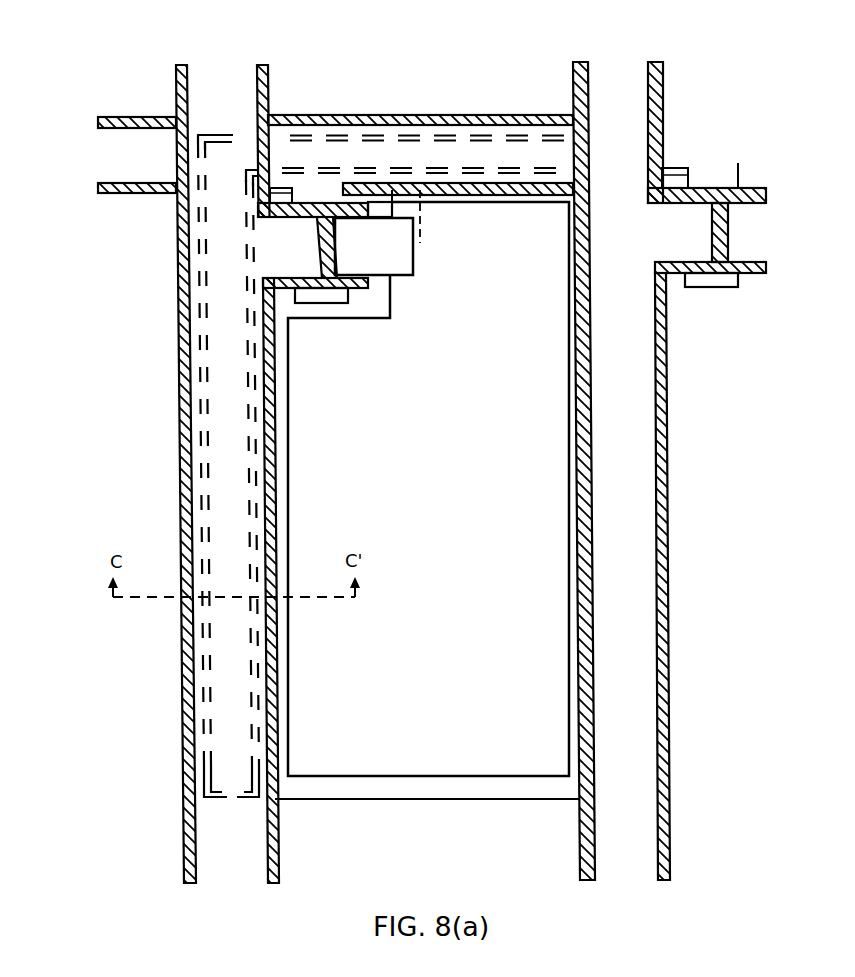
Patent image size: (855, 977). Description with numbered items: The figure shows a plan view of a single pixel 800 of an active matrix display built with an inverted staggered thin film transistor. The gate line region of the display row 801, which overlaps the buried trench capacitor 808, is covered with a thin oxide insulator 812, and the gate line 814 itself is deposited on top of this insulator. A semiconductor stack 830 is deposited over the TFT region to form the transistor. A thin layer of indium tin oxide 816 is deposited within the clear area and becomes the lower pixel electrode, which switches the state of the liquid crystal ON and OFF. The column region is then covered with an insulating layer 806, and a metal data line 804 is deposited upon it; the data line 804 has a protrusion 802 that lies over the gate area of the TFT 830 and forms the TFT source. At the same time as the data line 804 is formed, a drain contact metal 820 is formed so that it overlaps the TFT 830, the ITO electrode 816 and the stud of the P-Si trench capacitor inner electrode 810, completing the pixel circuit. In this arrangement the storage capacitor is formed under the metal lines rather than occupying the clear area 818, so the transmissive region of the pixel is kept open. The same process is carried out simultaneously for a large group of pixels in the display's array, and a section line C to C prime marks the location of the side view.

The single pixel 800 is at (93, 77).
The display row 801 is at (127, 158).
The protrusion 802 is at (292, 243).
The metal data line 804 is at (225, 339).
The insulating layer 806 is at (183, 477).
The buried trench capacitor 808 is at (206, 709).
The P-Si trench capacitor inner electrode 810 is at (407, 198).
The thin oxide insulator 812 is at (487, 113).
The gate line 814 is at (428, 153).
The ITO lower pixel electrode 816 is at (225, 97).
The clear area 818 is at (494, 788).
The drain contact metal 820 is at (382, 255).
The semiconductor stack 830 is at (367, 290).